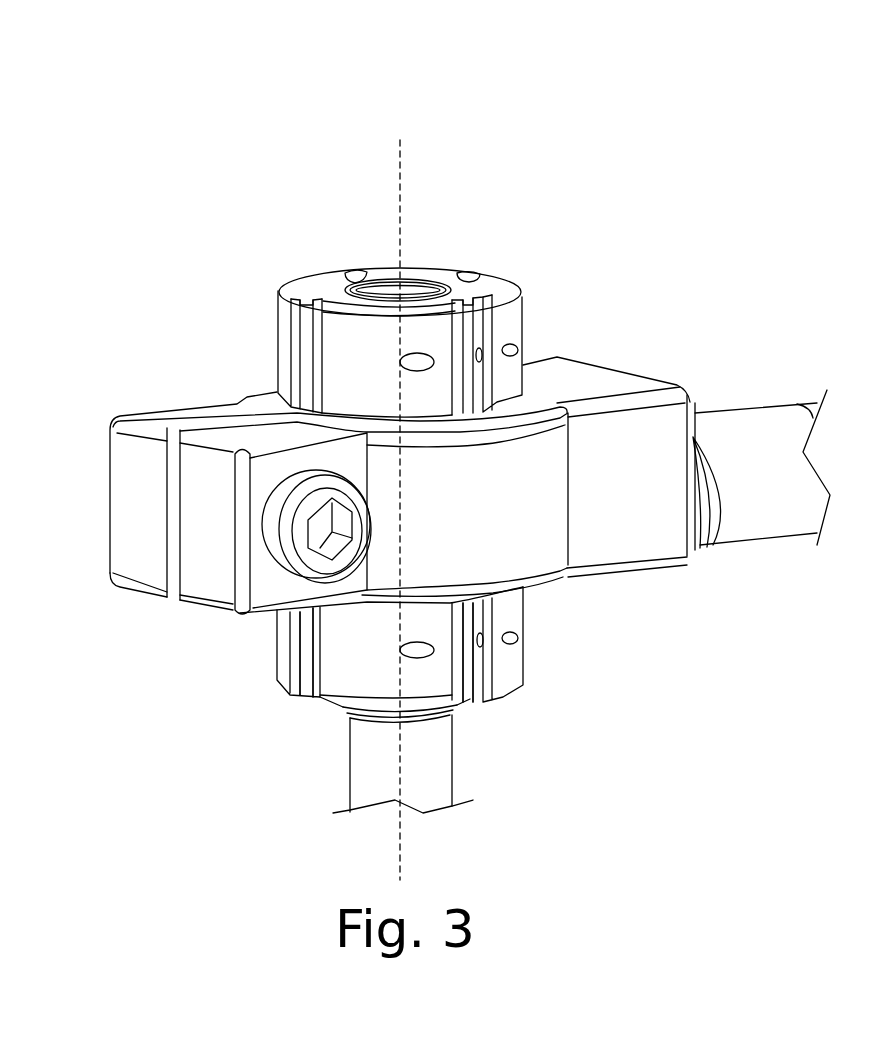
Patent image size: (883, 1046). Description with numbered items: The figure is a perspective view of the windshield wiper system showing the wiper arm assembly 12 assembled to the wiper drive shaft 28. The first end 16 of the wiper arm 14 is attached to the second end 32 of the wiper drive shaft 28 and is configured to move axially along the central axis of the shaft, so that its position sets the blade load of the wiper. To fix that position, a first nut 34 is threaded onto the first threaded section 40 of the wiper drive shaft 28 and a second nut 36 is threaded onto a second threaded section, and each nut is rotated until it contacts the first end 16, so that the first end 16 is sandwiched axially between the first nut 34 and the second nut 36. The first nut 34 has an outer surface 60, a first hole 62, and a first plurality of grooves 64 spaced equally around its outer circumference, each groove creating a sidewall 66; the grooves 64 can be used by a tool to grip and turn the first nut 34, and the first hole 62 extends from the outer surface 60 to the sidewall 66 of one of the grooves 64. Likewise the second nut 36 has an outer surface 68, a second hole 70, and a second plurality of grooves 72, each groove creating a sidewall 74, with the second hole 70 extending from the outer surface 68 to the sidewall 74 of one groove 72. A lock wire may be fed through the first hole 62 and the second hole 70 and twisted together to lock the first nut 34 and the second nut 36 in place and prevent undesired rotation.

The wiper arm assembly 12 is at (661, 141).
The wiper arm 14 is at (743, 387).
The first end 16 is at (634, 302).
The wiper drive shaft 28 is at (471, 777).
The second end 32 is at (428, 289).
The first nut 34 is at (270, 707).
The second nut 36 is at (293, 268).
The first threaded section 40 is at (461, 713).
The outer surface 60 is at (350, 643).
The first hole 62 is at (524, 638).
The first plurality of grooves 64 is at (520, 700).
The sidewall 66 is at (491, 670).
The outer surface 68 is at (338, 367).
The second hole 70 is at (514, 347).
The second plurality of grooves 72 is at (440, 252).
The sidewall 74 is at (494, 336).